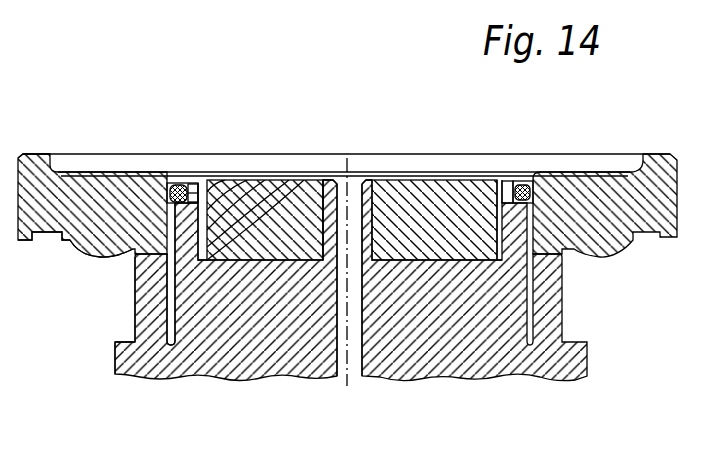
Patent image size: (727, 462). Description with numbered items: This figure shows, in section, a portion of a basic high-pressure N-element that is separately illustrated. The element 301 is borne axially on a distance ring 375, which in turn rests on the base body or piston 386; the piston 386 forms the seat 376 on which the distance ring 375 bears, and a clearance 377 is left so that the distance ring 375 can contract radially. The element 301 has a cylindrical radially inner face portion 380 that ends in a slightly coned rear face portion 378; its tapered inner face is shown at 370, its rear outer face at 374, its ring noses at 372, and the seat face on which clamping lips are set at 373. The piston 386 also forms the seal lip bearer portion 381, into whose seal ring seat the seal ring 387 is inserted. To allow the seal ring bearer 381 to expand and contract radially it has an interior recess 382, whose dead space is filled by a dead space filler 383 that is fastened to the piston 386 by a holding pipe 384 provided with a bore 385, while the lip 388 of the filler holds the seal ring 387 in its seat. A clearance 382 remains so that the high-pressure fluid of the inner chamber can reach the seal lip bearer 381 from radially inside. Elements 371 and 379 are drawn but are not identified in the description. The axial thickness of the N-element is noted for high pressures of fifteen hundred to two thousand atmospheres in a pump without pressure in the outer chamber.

The element 301 is at (90, 178).
The tapered inner face 370 is at (152, 176).
The cover plate 371 is at (65, 163).
The ring noses 372 is at (37, 150).
The seat face 373 is at (42, 238).
The rear outer face 374 is at (86, 259).
The distance ring 375 is at (140, 303).
The seat 376 is at (118, 358).
The clearance 377 is at (178, 330).
The rear face portion 378 is at (196, 250).
The ring 379 is at (195, 186).
The radial inner face portion 380 is at (186, 193).
The seal lip bearer portion 381 is at (208, 238).
The interior recess 382 is at (292, 205).
The dead space filler 383 is at (300, 208).
The holding pipe 384 is at (343, 222).
The wall 385 is at (384, 202).
The base body or piston 386 is at (250, 362).
The seal ring 387 is at (523, 186).
The lip 388 is at (497, 188).